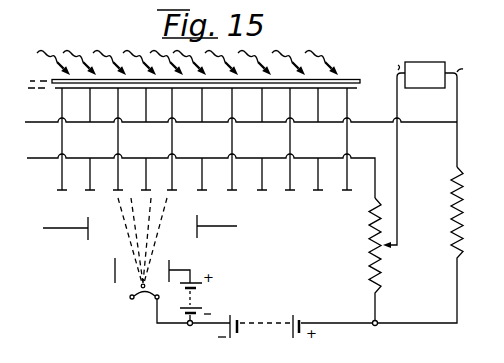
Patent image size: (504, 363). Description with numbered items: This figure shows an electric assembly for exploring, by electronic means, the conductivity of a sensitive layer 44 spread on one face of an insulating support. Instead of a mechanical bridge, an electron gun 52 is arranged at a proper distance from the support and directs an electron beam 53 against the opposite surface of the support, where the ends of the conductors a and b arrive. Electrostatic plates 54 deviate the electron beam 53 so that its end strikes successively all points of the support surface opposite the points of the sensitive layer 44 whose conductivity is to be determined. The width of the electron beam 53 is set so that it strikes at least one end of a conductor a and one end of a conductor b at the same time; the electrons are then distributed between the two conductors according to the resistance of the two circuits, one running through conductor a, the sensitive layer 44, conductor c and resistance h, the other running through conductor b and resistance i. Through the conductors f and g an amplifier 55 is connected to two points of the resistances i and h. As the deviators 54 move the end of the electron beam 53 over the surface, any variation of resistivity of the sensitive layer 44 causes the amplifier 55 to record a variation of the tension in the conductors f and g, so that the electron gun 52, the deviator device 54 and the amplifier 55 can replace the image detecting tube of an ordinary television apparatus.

The sensitive layer 44 is at (346, 75).
The electron gun 52 is at (122, 297).
The electron beam 53 is at (155, 240).
The electrostatic plates 54 is at (76, 242).
The amplifier 55 is at (420, 62).
The conductor a is at (333, 201).
The conductor b is at (201, 165).
The conductor c is at (241, 110).
The conductor f is at (390, 154).
The conductor g is at (462, 110).
The resistance h is at (430, 245).
The resistance i is at (380, 262).